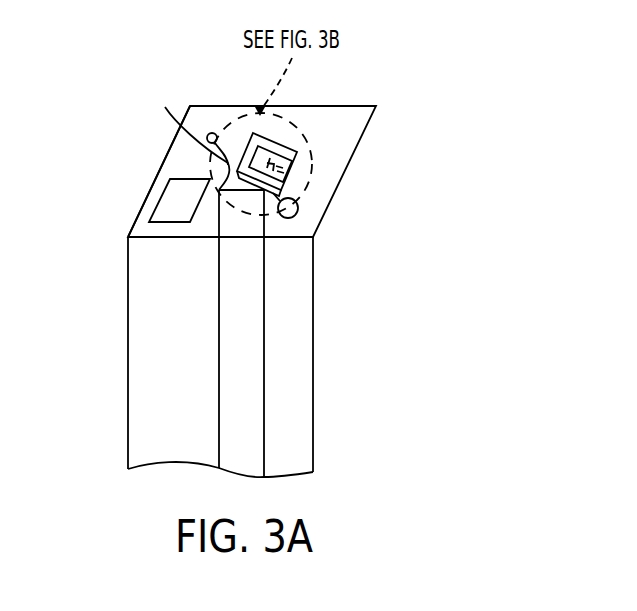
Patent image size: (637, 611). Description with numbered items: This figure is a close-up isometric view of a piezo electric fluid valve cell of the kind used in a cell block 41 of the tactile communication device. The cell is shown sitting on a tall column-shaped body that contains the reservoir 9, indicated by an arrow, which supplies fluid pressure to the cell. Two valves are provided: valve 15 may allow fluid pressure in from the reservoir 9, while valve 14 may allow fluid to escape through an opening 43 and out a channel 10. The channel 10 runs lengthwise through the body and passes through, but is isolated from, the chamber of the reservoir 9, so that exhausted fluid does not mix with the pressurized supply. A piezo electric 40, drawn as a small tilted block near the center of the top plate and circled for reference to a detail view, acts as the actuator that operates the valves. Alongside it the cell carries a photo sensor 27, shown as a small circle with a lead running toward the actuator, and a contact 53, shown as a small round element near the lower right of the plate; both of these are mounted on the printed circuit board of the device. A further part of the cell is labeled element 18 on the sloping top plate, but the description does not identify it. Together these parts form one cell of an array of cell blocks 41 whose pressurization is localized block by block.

The reservoir 9 is at (362, 348).
The channel 10 is at (264, 459).
The valve 14 is at (270, 140).
The valve 15 is at (154, 212).
The cover plate 18 is at (342, 177).
The photo sensor 27 is at (213, 132).
The piezo electric 40 is at (293, 141).
The cell block 41 is at (163, 165).
The opening 43 is at (193, 135).
The contact 53 is at (298, 213).